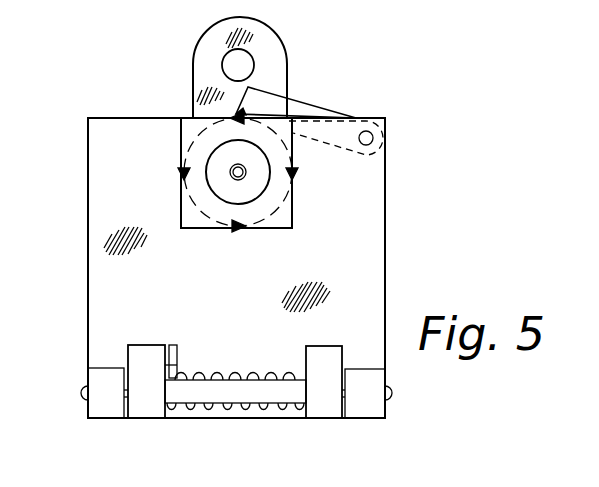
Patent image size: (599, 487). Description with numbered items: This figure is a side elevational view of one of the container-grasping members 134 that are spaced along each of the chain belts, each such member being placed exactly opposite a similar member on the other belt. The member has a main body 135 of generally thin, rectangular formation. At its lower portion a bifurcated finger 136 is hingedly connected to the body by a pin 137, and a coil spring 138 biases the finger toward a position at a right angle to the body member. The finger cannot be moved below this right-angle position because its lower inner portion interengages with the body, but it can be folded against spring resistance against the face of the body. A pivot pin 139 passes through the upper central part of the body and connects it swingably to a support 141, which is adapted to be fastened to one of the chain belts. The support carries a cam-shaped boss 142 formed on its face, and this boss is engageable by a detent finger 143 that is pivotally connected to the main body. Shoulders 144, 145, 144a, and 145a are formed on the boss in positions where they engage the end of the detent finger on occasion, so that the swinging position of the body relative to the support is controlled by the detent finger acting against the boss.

The container-grasping member 134 is at (385, 272).
The main body 135 is at (98, 287).
The bifurcated finger 136 is at (330, 412).
The pin 137 is at (392, 392).
The coil spring 138 is at (195, 415).
The pivot pin 139 is at (245, 177).
The support 141 is at (207, 44).
The cam-shaped boss 142 is at (232, 113).
The detent finger 143 is at (316, 112).
The shoulder 144 is at (242, 112).
The shoulder 144a is at (236, 231).
The shoulder 145 is at (297, 178).
The shoulder 145a is at (183, 170).